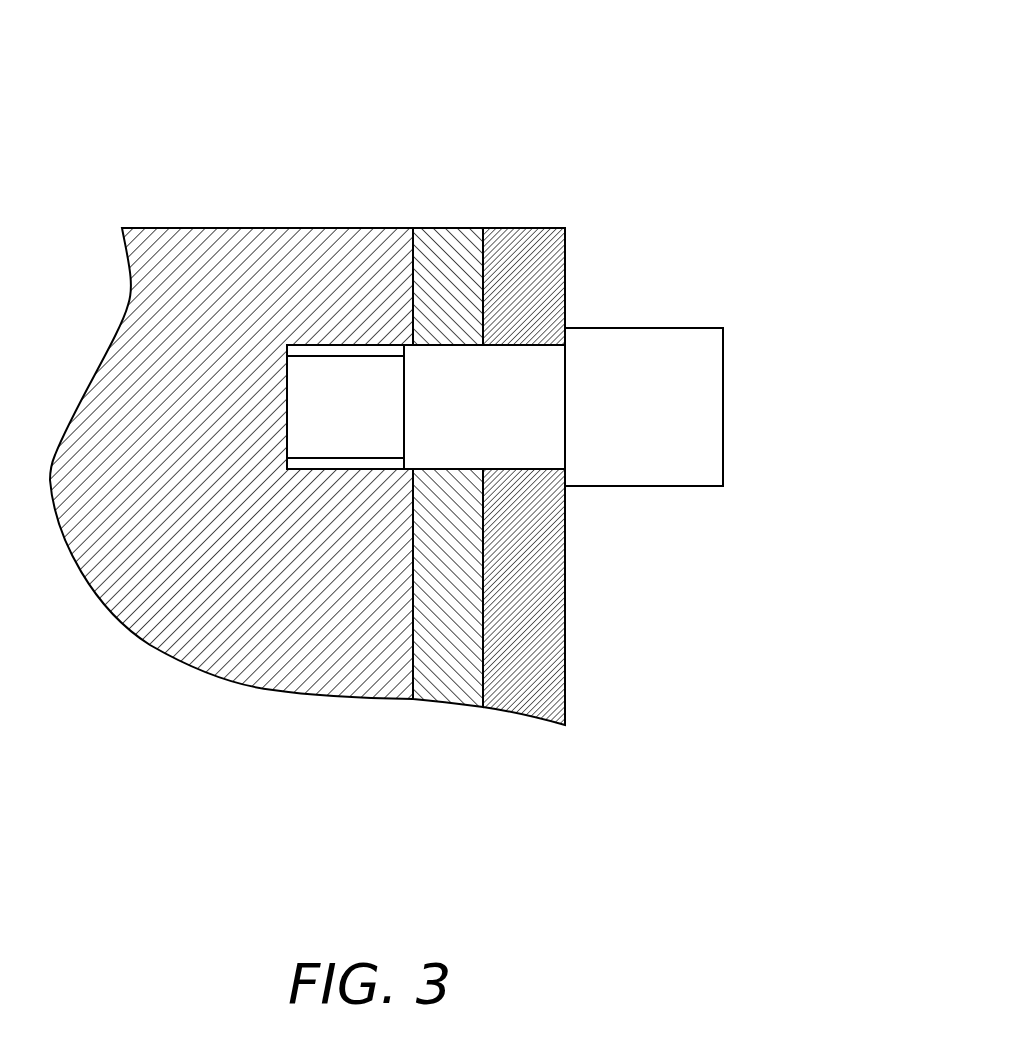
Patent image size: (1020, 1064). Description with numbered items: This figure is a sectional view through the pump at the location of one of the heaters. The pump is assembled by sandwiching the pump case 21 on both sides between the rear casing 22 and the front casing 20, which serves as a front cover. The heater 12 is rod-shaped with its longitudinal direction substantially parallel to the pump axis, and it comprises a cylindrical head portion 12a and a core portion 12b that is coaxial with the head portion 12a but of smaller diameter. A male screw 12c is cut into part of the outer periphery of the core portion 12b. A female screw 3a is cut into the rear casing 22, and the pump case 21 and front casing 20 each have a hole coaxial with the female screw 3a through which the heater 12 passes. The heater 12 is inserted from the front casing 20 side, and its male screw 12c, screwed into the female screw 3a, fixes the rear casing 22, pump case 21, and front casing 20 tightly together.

The rear casing 22 is at (222, 228).
The pump case 21 is at (447, 228).
The front casing 20 is at (565, 259).
The heater 12 is at (750, 396).
The head portion 12a is at (650, 486).
The core portion 12b is at (442, 472).
The male screw 12c is at (337, 353).
The female screw 3a is at (313, 493).